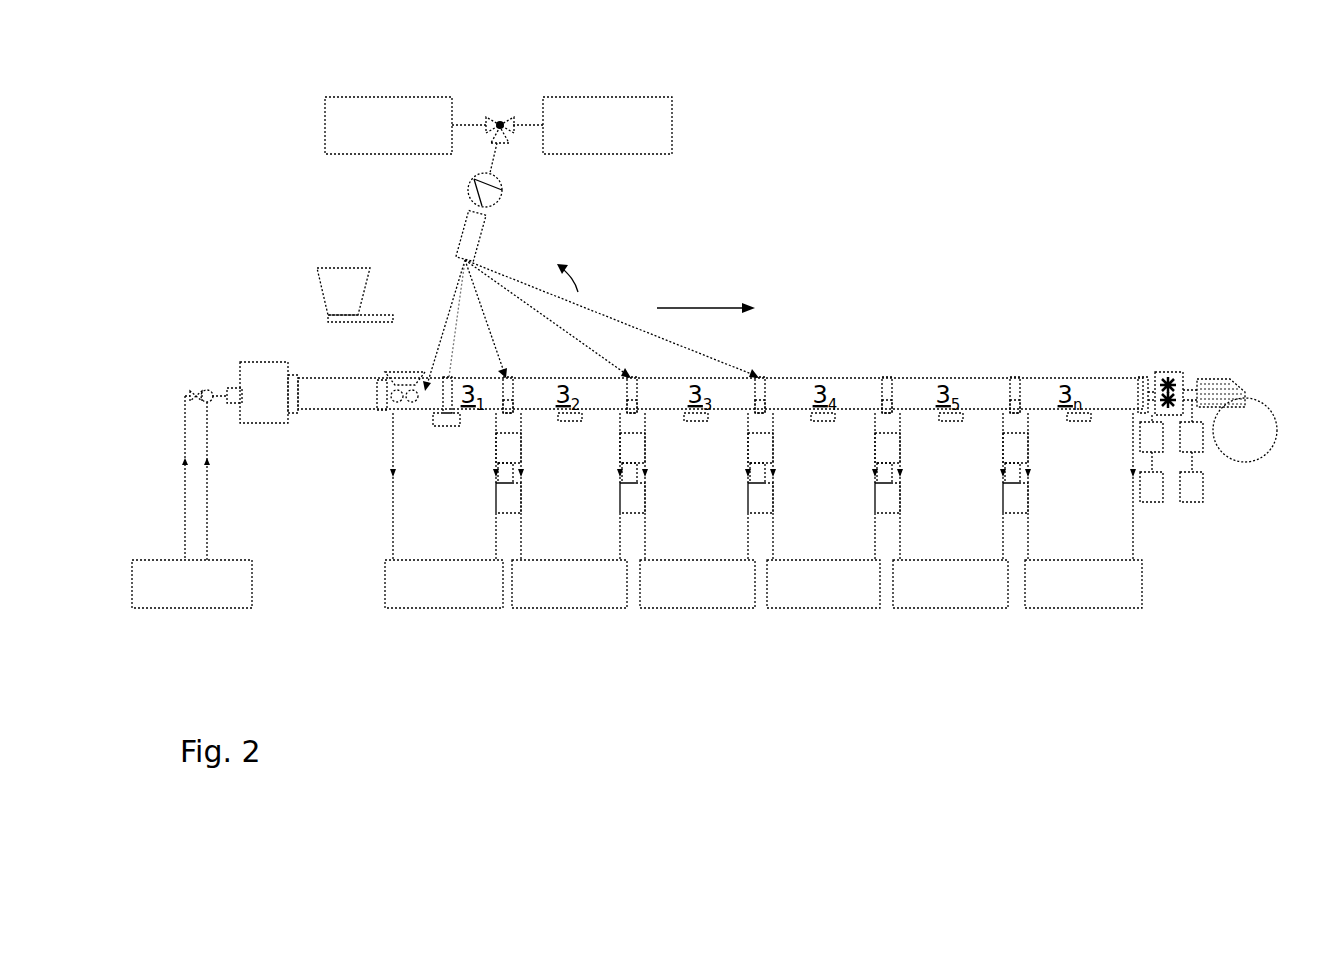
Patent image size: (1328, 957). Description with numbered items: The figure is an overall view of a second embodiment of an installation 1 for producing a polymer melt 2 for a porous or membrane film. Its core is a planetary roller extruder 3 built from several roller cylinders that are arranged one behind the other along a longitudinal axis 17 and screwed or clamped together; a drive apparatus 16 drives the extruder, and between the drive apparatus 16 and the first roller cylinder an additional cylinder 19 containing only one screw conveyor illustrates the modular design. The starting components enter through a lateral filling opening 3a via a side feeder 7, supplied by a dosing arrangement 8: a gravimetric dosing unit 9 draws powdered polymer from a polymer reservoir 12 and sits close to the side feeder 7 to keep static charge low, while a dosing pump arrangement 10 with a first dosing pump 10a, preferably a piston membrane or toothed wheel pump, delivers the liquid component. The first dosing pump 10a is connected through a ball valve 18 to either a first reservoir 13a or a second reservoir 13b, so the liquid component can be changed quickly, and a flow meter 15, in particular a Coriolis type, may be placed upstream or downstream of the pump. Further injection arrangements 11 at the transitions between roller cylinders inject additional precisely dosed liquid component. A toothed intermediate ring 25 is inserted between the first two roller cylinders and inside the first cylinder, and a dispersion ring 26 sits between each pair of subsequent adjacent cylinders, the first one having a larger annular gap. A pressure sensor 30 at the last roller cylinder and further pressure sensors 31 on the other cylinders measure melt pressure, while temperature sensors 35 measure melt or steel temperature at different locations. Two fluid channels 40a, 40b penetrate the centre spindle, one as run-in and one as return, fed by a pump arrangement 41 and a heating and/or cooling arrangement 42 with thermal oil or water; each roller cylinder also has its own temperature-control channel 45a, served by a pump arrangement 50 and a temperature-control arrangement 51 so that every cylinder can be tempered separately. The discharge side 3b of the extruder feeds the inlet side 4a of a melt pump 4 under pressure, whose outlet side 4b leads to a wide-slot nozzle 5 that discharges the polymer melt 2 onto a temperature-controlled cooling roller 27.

The installation 1 is at (168, 132).
The polymer melt 2 is at (1263, 398).
The planetary roller extruder 3 is at (803, 278).
The filling opening 3a is at (384, 411).
The discharge side 3b is at (1143, 382).
The melt pump 4 is at (1167, 370).
The inlet side 4a is at (1160, 380).
The outlet side 4b is at (1182, 387).
The wide-slot nozzle 5 is at (1208, 385).
The side feeder 7 is at (388, 375).
The dosing arrangement 8 is at (272, 288).
The gravimetric dosing unit 9 is at (370, 318).
The dosing pump arrangement 10 is at (560, 175).
The first dosing pump 10a is at (502, 190).
The injection arrangement 11 is at (449, 380).
The polymer reservoir 12 is at (343, 291).
The first reservoir 13a is at (388, 125).
The second reservoir 13b is at (607, 125).
The flow meter 15 is at (472, 235).
The drive apparatus 16 is at (262, 377).
The longitudinal axis 17 is at (698, 308).
The ball valve 18 is at (499, 118).
The additional cylinder 19 is at (720, 393).
The toothed intermediate ring 25 is at (507, 407).
The dispersion ring 26 is at (763, 400).
The cooling roller 27 is at (1272, 457).
The pressure sensor 30 is at (1140, 491).
The pressure sensor 31 is at (622, 505).
The temperature sensor 35 is at (622, 455).
The fluid channel 40a is at (184, 428).
The fluid channel 40b is at (208, 520).
The pump arrangement 41 is at (192, 584).
The heating and/or cooling arrangement 42 is at (192, 584).
The temperature-control channel 45a is at (494, 550).
The pump arrangement 50 is at (763, 584).
The temperature-control arrangement 51 is at (763, 584).